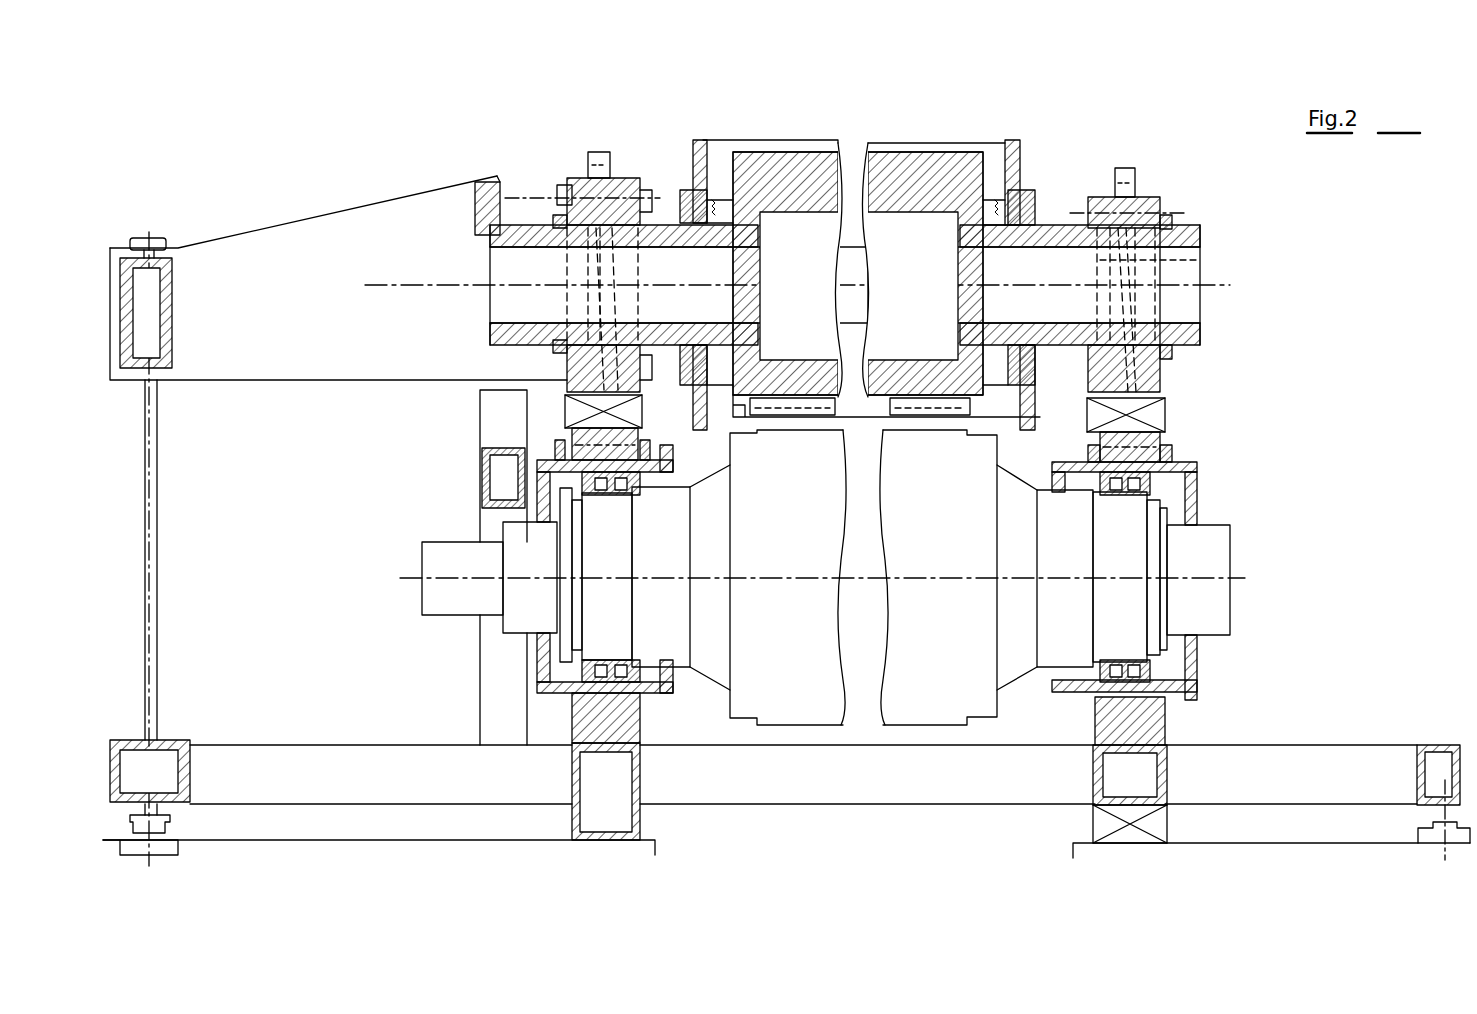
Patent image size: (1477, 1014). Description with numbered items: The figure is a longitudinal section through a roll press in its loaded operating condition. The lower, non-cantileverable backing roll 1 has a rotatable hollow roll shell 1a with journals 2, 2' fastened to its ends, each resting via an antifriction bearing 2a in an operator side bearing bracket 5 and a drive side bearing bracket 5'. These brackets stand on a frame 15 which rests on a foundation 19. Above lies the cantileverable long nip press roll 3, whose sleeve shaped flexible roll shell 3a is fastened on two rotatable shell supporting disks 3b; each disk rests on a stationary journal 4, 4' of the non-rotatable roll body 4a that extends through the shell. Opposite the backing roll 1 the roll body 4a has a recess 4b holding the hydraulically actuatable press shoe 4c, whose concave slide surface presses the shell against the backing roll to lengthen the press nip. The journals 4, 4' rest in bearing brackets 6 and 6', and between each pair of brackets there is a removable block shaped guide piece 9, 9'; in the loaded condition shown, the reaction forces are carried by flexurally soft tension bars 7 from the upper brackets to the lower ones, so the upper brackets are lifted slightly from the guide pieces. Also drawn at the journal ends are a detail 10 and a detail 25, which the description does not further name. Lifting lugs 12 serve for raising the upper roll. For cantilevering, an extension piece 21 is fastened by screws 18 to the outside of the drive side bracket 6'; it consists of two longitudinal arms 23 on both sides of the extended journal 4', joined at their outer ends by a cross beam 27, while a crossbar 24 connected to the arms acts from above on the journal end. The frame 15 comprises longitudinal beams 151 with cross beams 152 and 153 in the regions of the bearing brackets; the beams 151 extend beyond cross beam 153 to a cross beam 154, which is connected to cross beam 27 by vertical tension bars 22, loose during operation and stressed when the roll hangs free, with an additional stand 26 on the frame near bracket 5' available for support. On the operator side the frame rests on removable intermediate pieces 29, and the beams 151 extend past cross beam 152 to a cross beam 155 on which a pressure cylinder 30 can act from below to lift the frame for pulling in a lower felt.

The backing roll 1 is at (1268, 565).
The roll shell 1a is at (778, 715).
The journal 2 is at (1211, 581).
The journal 2' is at (489, 591).
The antifriction bearing 2a is at (1163, 700).
The cantileverable roll 3 is at (1277, 237).
The roll shell 3a is at (772, 137).
The shell supporting disks 3b is at (693, 140).
The journal 4 is at (1093, 278).
The journal 4' is at (814, 285).
The roll body 4a is at (928, 155).
The recess 4b is at (830, 408).
The press shoe 4c is at (920, 420).
The bearing bracket 5 is at (872, 588).
The bearing bracket 5' is at (615, 441).
The bearing bracket 6 is at (1141, 306).
The bearing bracket 6' is at (580, 368).
The tension bar 7 is at (598, 300).
The guide piece 9 is at (1140, 422).
The guide piece 9' is at (585, 411).
The bore 10 is at (1200, 258).
The lifting lugs 12 is at (597, 150).
The frame 15 is at (1330, 737).
The screws 18 is at (642, 190).
The foundation 19 is at (484, 838).
The extension piece 21 is at (300, 208).
The vertical tension bars 22 is at (160, 566).
The longitudinal arms 23 is at (302, 368).
The crossbar 24 is at (472, 222).
The pin 25 is at (562, 188).
The additional stand 26 is at (493, 693).
The cross beam 27 is at (172, 300).
The intermediate pieces 29 is at (1098, 828).
The pressure cylinder 30 is at (1417, 828).
The longitudinal beams 151 is at (355, 772).
The cross beam 152 is at (1168, 782).
The cross beam 153 is at (641, 822).
The cross beam 154 is at (178, 740).
The cross beam 155 is at (1417, 772).